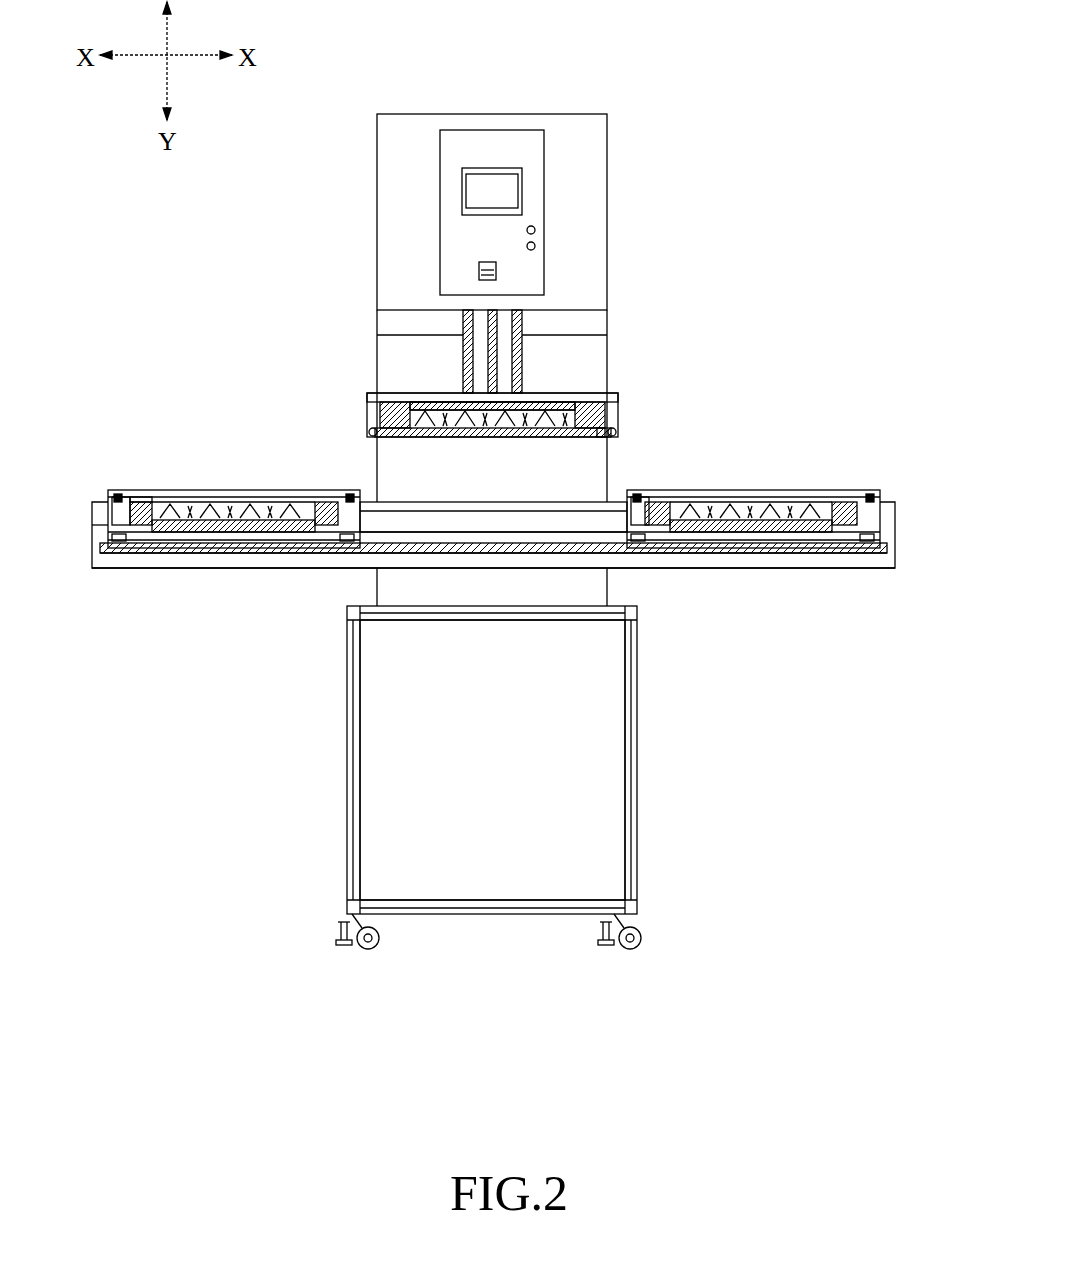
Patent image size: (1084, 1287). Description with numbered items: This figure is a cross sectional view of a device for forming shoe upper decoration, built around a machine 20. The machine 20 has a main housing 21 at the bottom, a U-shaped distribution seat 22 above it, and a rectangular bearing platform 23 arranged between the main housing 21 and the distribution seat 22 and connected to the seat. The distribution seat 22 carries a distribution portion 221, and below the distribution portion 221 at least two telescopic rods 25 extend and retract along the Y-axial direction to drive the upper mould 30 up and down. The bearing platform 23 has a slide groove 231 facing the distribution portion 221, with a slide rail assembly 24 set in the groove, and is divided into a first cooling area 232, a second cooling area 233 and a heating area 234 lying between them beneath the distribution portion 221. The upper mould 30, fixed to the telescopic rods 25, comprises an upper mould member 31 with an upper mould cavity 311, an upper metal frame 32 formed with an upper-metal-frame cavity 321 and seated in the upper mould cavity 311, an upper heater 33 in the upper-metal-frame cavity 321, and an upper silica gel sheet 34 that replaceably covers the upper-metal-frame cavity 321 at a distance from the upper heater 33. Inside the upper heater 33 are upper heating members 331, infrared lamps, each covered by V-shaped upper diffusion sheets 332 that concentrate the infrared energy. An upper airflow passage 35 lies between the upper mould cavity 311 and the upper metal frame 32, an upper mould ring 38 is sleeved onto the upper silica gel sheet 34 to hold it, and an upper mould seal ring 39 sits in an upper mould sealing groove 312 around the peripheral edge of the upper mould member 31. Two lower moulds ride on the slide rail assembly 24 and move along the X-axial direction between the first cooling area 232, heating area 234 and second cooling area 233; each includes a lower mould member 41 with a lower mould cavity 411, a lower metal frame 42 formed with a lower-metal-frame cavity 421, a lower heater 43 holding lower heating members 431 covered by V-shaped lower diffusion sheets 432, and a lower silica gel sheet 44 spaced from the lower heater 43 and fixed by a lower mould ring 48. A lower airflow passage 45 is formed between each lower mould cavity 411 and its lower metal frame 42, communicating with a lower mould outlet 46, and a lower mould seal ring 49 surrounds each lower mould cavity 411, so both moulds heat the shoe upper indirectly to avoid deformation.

The machine 20 is at (352, 219).
The main housing 21 is at (593, 830).
The U-shaped distribution seat 22 is at (607, 316).
The distribution portion 221 is at (607, 198).
The bearing platform 23 is at (895, 538).
The slide groove 231 is at (612, 515).
The first cooling area 232 is at (245, 560).
The second cooling area 233 is at (763, 575).
The heating area 234 is at (492, 558).
The slide rail assembly 24 is at (648, 560).
The telescopic rods 25 is at (522, 346).
The upper mould 30 is at (636, 410).
The upper mould member 31 is at (640, 400).
The upper mould cavity 311 is at (612, 432).
The upper mould sealing groove 312 is at (372, 418).
The upper metal frame 32 is at (412, 413).
The upper-metal-frame cavity 321 is at (408, 400).
The upper heater 33 is at (416, 386).
The upper heating members 331 is at (600, 392).
The V-shaped upper diffusion sheets 332 is at (578, 405).
The upper silica gel sheet 34 is at (428, 432).
The upper airflow passage 35 is at (608, 436).
The upper mould ring 38 is at (594, 440).
The upper mould seal ring 39 is at (380, 436).
The lower mould members 41 is at (108, 525).
The lower mould cavity 411 is at (128, 497).
The lower metal frame 42 is at (148, 550).
The lower-metal-frame cavity 421 is at (160, 503).
The lower heater 43 is at (183, 528).
The lower heating members 431 is at (795, 508).
The V-shaped lower diffusion sheets 432 is at (792, 542).
The lower silica gel sheet 44 is at (228, 490).
The lower airflow passage 45 is at (862, 498).
The lower mould outlet 46 is at (342, 545).
The lower mould ring 48 is at (140, 503).
The lower mould seal ring 49 is at (205, 492).